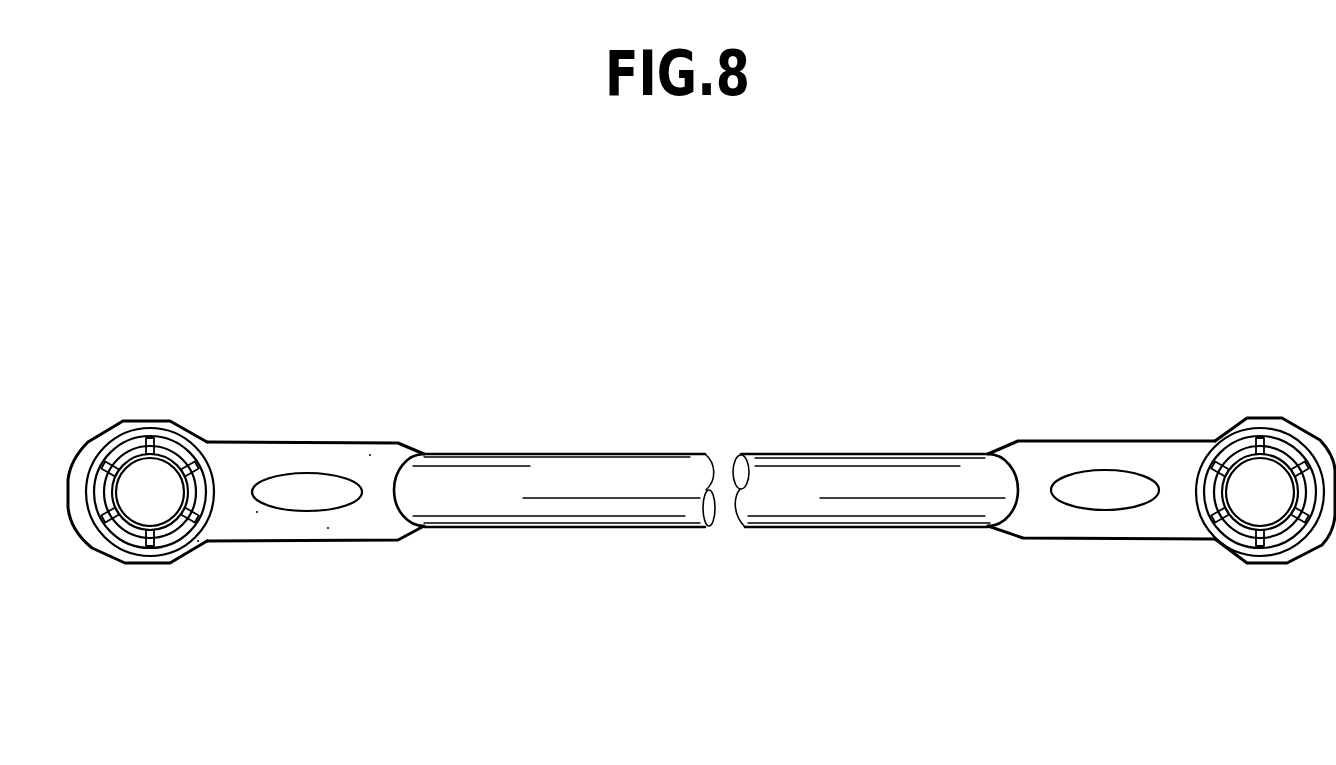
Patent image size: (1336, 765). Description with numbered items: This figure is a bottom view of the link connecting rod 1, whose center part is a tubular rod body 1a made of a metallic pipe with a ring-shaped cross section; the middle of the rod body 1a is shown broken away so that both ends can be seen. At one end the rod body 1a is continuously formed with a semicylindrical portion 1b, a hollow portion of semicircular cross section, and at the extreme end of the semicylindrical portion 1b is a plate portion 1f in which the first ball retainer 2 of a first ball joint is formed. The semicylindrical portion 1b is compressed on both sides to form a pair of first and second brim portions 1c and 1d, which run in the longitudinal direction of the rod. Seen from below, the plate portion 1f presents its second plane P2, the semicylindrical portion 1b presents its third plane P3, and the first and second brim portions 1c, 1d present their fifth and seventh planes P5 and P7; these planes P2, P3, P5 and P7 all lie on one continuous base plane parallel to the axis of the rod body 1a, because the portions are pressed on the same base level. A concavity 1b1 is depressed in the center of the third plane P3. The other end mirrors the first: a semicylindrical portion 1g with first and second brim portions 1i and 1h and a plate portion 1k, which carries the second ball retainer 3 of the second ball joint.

The link connecting rod 1 is at (1178, 212).
The rod body 1a is at (765, 518).
The semicylindrical portion 1b is at (316, 494).
The concavity 1b1 is at (292, 485).
The first brim portion 1c is at (398, 443).
The second brim portion 1d is at (385, 541).
The plate portion 1f is at (122, 420).
The semicylindrical portion 1g is at (1086, 498).
The second brim portion 1h is at (1018, 441).
The first brim portion 1i is at (1023, 539).
The plate portion 1k is at (1303, 425).
The first ball retainer 2 is at (124, 564).
The second ball retainer 3 is at (1301, 546).
The second plane P2 is at (198, 542).
The third plane P3 is at (257, 512).
The fifth plane P5 is at (370, 455).
The seventh plane P7 is at (328, 528).